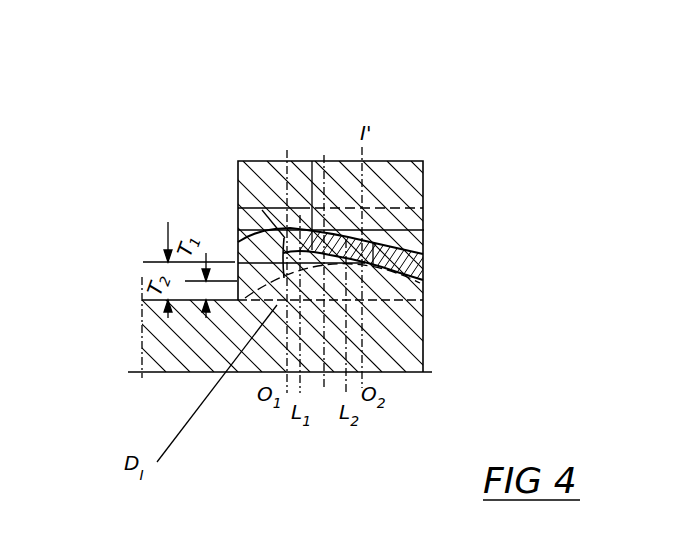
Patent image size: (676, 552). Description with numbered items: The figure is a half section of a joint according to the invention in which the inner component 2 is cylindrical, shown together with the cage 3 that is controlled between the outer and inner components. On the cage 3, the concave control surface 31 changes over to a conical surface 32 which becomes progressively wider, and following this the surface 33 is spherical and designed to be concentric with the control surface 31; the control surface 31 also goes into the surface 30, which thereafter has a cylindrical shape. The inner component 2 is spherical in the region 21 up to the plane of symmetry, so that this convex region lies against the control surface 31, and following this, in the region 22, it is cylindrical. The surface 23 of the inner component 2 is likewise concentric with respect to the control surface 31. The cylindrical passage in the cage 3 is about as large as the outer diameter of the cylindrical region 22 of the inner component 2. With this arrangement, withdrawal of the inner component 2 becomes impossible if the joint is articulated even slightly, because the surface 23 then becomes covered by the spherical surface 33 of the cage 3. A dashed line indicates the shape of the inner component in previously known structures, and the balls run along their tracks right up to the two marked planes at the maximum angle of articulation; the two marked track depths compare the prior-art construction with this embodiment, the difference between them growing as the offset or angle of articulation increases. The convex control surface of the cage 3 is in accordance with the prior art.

The inner component 2 is at (405, 320).
The cage 3 is at (425, 274).
The spherical region of inner component 21 is at (386, 265).
The cylindrical region of inner component 22 is at (290, 230).
The surface of inner component 23 is at (235, 252).
The cylindrical surface of cage 30 is at (236, 242).
The concave control surface 31 is at (415, 276).
The conical surface 32 is at (312, 161).
The spherical surface of cage 33 is at (262, 210).